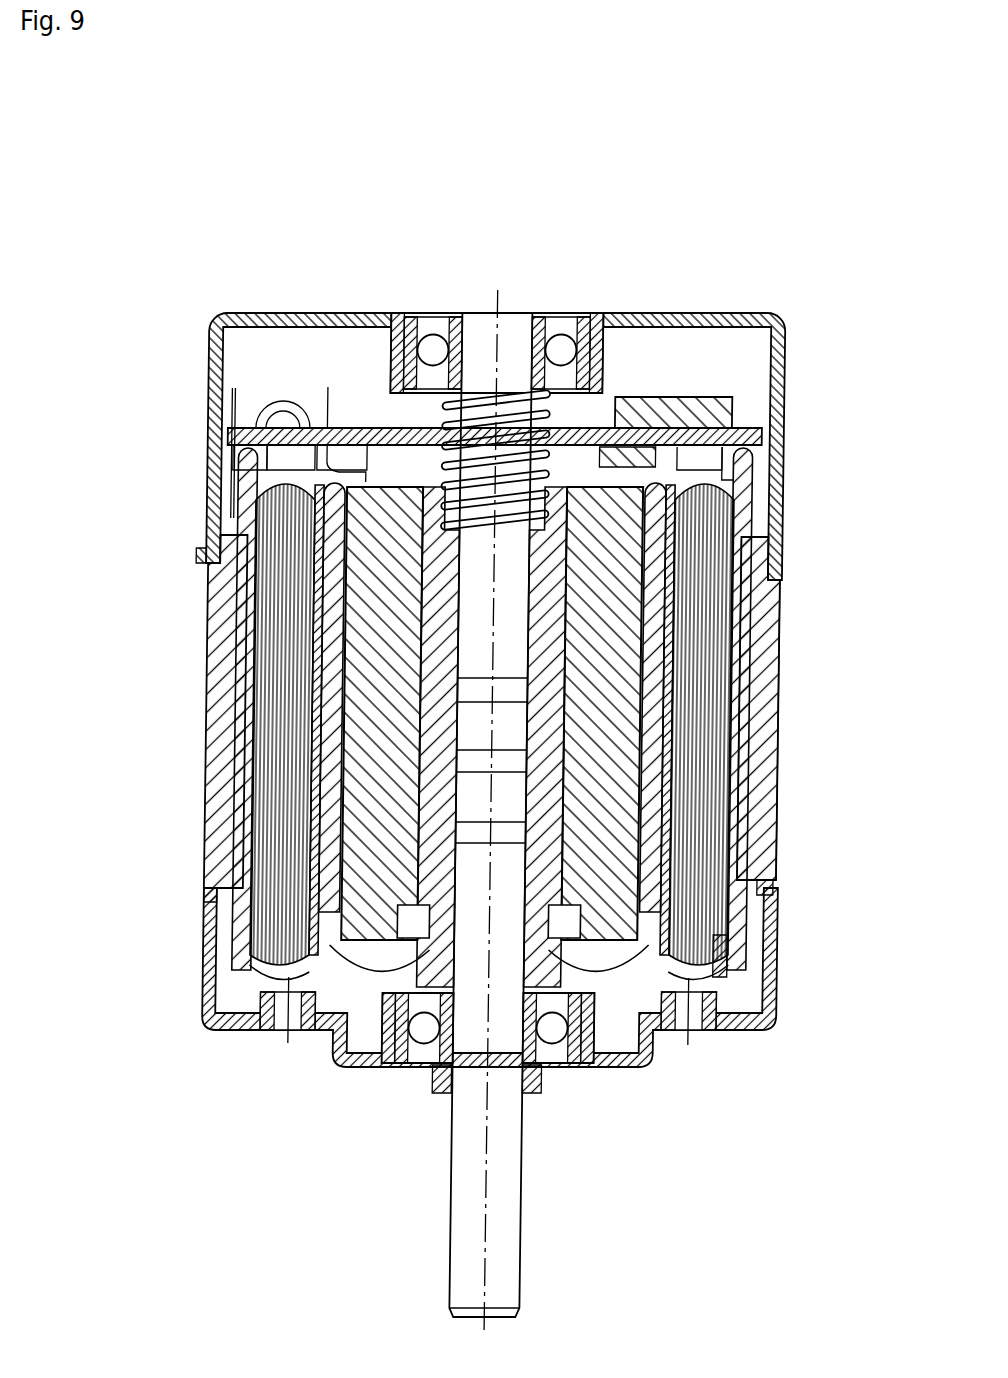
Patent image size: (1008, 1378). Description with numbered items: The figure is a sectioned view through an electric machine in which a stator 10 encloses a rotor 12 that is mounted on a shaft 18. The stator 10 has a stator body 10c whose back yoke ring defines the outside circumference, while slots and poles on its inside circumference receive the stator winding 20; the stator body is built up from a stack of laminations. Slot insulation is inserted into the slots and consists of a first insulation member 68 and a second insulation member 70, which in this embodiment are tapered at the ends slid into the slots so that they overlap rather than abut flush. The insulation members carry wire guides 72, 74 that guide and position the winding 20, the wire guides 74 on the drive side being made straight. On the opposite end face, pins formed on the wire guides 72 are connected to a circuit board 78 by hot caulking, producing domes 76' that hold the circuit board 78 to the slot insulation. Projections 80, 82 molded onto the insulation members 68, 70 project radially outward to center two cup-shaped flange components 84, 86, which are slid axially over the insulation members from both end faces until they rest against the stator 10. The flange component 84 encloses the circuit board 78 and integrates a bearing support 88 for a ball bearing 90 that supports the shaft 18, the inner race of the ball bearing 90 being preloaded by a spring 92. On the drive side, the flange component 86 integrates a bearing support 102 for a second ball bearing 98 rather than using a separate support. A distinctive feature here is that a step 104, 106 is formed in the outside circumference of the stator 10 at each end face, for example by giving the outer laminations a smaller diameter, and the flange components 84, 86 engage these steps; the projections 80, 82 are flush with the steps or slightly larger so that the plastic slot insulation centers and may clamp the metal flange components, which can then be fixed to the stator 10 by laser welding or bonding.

The flange component 84 is at (783, 333).
The bearing support 88 is at (598, 372).
The ball bearing 90 is at (552, 345).
The spring 92 is at (503, 390).
The circuit board 78 is at (757, 438).
The projection 80 is at (760, 535).
The wire guide 72 is at (752, 462).
The dome 76' is at (206, 409).
The step 104 is at (208, 555).
The stator 10 is at (758, 575).
The stator body 10c is at (763, 630).
The second insulation member 70 is at (745, 822).
The first insulation member 68 is at (740, 702).
The stator winding 20 is at (710, 665).
The rotor 12 is at (617, 848).
The shaft 18 is at (497, 1137).
The flange component 86 is at (777, 962).
The step 106 is at (212, 893).
The projection 82 is at (773, 910).
The wire guide 74 is at (743, 937).
The bearing support 102 is at (583, 1020).
The ball bearing 98 is at (557, 1032).